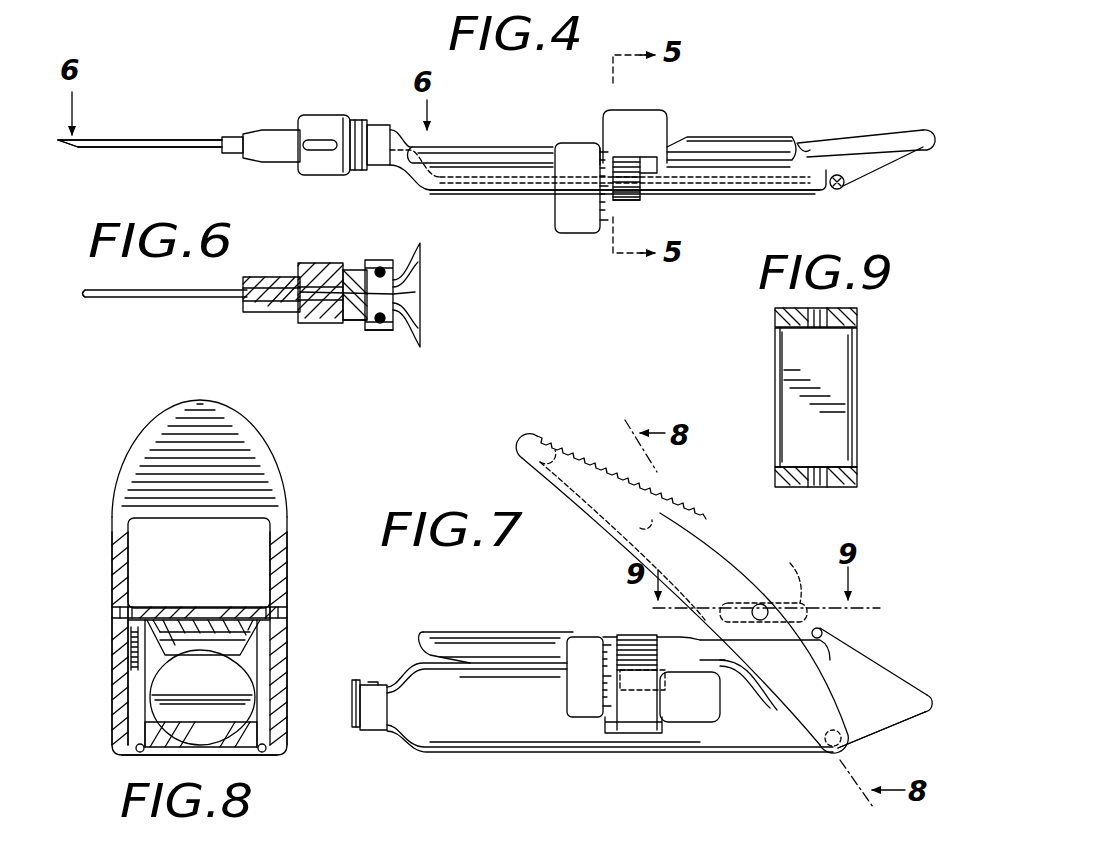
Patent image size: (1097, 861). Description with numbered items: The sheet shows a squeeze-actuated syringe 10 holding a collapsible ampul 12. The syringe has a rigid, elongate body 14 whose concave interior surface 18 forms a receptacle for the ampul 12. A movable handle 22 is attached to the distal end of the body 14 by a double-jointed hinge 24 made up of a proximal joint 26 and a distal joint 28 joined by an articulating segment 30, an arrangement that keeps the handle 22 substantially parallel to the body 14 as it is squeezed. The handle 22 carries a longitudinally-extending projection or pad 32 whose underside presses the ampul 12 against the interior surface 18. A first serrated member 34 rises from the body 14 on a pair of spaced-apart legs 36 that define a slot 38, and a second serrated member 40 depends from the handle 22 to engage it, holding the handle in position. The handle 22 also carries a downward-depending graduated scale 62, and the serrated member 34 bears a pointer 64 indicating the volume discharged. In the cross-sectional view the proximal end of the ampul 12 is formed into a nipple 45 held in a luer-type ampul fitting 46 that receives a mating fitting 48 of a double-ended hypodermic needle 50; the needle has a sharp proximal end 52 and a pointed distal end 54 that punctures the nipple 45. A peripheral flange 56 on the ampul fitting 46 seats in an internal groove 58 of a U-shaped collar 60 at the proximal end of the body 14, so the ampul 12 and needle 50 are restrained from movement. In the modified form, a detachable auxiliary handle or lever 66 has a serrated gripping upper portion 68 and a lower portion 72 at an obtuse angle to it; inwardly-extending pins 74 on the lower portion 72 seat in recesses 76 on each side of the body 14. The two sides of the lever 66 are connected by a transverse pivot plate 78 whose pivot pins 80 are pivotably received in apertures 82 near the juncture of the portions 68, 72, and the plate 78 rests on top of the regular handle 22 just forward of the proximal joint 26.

In FIG. 4, the squeeze-actuated syringe 10 is at (340, 86).
In FIG. 4, the collapsible ampul 12 is at (435, 188).
In FIG. 8, the collapsible ampul 12 is at (233, 685).
In FIG. 7, the collapsible ampul 12 is at (407, 670).
In FIG. 4, the elongate body 14 is at (777, 192).
In FIG. 8, the elongate body 14 is at (217, 757).
In FIG. 7, the elongate body 14 is at (457, 748).
In FIG. 4, the interior surface 18 is at (470, 190).
In FIG. 4, the movable handle 22 is at (496, 147).
In FIG. 8, the movable handle 22 is at (208, 607).
In FIG. 7, the movable handle 22 is at (513, 632).
In FIG. 4, the double-jointed hinge 24 is at (918, 125).
In FIG. 7, the double-jointed hinge 24 is at (890, 656).
In FIG. 4, the proximal joint 26 is at (805, 142).
In FIG. 7, the proximal joint 26 is at (823, 632).
In FIG. 4, the distal joint 28 is at (926, 160).
In FIG. 7, the distal joint 28 is at (935, 707).
In FIG. 4, the articulating segment 30 is at (868, 128).
In FIG. 7, the articulating segment 30 is at (893, 673).
In FIG. 4, the projection or pad 32 is at (408, 176).
In FIG. 8, the projection or pad 32 is at (268, 643).
In FIG. 7, the projection or pad 32 is at (437, 647).
In FIG. 4, the first serrated member 34 is at (657, 117).
In FIG. 7, the first serrated member 34 is at (665, 693).
In FIG. 7, the spaced-apart legs 36 is at (605, 727).
In FIG. 4, the slot 38 is at (645, 165).
In FIG. 7, the slot 38 is at (631, 735).
In FIG. 4, the second serrated member 40 is at (627, 200).
In FIG. 8, the second serrated member 40 is at (132, 650).
In FIG. 7, the second serrated member 40 is at (652, 648).
In FIG. 6, the nipple 45 is at (357, 268).
In FIG. 4, the ampul fitting 46 is at (310, 116).
In FIG. 6, the ampul fitting 46 is at (308, 263).
In FIG. 4, the needle fitting 48 is at (270, 160).
In FIG. 6, the needle fitting 48 is at (258, 310).
In FIG. 4, the hypodermic needle 50 is at (164, 140).
In FIG. 6, the hypodermic needle 50 is at (163, 296).
In FIG. 4, the proximal end of needle 52 is at (64, 143).
In FIG. 6, the proximal end of needle 52 is at (88, 299).
In FIG. 6, the distal end of needle 54 is at (420, 292).
In FIG. 4, the peripheral flange 56 is at (373, 120).
In FIG. 6, the peripheral flange 56 is at (367, 320).
In FIG. 7, the peripheral flange 56 is at (373, 682).
In FIG. 6, the internal groove 58 is at (385, 265).
In FIG. 4, the U-shaped collar 60 is at (372, 168).
In FIG. 6, the U-shaped collar 60 is at (382, 330).
In FIG. 7, the U-shaped collar 60 is at (372, 712).
In FIG. 4, the graduated scale 62 is at (558, 232).
In FIG. 7, the graduated scale 62 is at (573, 687).
In FIG. 4, the pointer 64 is at (602, 147).
In FIG. 7, the pointer 64 is at (673, 700).
In FIG. 8, the auxiliary handle or lever 66 is at (282, 515).
In FIG. 7, the auxiliary handle or lever 66 is at (723, 550).
In FIG. 8, the upper portion 68 is at (247, 433).
In FIG. 7, the upper portion 68 is at (647, 503).
In FIG. 9, the lower portion 72 is at (857, 312).
In FIG. 8, the lower portion 72 is at (287, 633).
In FIG. 7, the lower portion 72 is at (807, 705).
In FIG. 8, the pins 74 is at (140, 757).
In FIG. 4, the recesses 76 is at (844, 185).
In FIG. 8, the recesses 76 is at (255, 745).
In FIG. 7, the recesses 76 is at (850, 748).
In FIG. 9, the transverse pivot plate 78 is at (822, 427).
In FIG. 8, the transverse pivot plate 78 is at (193, 607).
In FIG. 7, the transverse pivot plate 78 is at (805, 581).
In FIG. 9, the pivot pin 80 is at (798, 323).
In FIG. 8, the pivot pin 80 is at (120, 611).
In FIG. 7, the pivot pin 80 is at (760, 603).
In FIG. 9, the aperture 82 is at (817, 324).
In FIG. 8, the aperture 82 is at (128, 608).